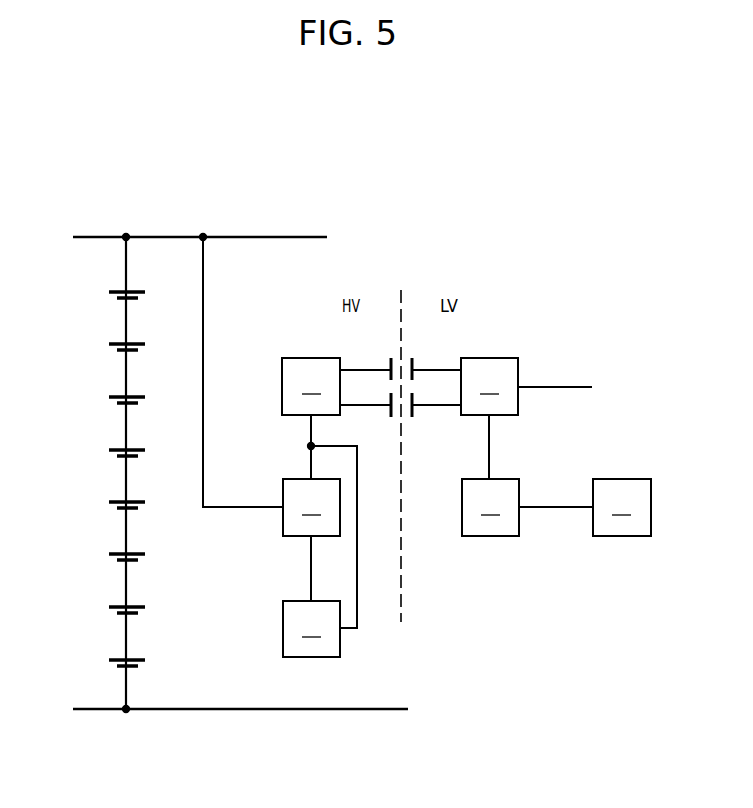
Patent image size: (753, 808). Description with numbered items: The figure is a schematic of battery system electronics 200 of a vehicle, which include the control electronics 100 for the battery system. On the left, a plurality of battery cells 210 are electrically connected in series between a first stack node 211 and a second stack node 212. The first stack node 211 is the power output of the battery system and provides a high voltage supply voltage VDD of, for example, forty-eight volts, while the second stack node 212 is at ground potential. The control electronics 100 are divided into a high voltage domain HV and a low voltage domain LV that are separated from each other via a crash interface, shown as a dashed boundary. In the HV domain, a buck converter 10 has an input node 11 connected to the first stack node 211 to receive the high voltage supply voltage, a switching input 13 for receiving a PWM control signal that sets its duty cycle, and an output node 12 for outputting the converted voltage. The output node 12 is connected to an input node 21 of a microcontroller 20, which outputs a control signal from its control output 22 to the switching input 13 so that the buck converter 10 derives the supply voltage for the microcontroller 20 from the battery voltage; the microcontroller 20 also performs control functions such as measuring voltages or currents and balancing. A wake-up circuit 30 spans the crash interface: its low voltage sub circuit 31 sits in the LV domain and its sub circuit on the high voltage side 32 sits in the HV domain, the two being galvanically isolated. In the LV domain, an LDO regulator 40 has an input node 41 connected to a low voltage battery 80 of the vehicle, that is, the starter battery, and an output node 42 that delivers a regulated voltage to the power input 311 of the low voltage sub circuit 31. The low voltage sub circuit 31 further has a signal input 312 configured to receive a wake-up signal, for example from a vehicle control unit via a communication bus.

The battery system electronics 200 is at (232, 192).
The battery cell 210 is at (113, 397).
The first stack node 211 is at (128, 234).
The second stack node 212 is at (126, 712).
The control electronics 100 is at (282, 353).
The sub circuit on the high voltage side 32 is at (336, 387).
The buck converter 10 is at (311, 507).
The input node 11 is at (283, 506).
The output node 12 is at (305, 537).
The switching input 13 is at (305, 478).
The microcontroller 20 is at (311, 629).
The input node 21 is at (308, 600).
The control output 22 is at (342, 629).
The wake-up circuit 30 is at (460, 346).
The low voltage sub circuit 31 is at (465, 387).
The power input 311 is at (485, 417).
The signal input 312 is at (520, 382).
The LDO regulator 40 is at (490, 507).
The input node 41 is at (520, 509).
The output node 42 is at (493, 478).
The low voltage battery 80 is at (622, 507).